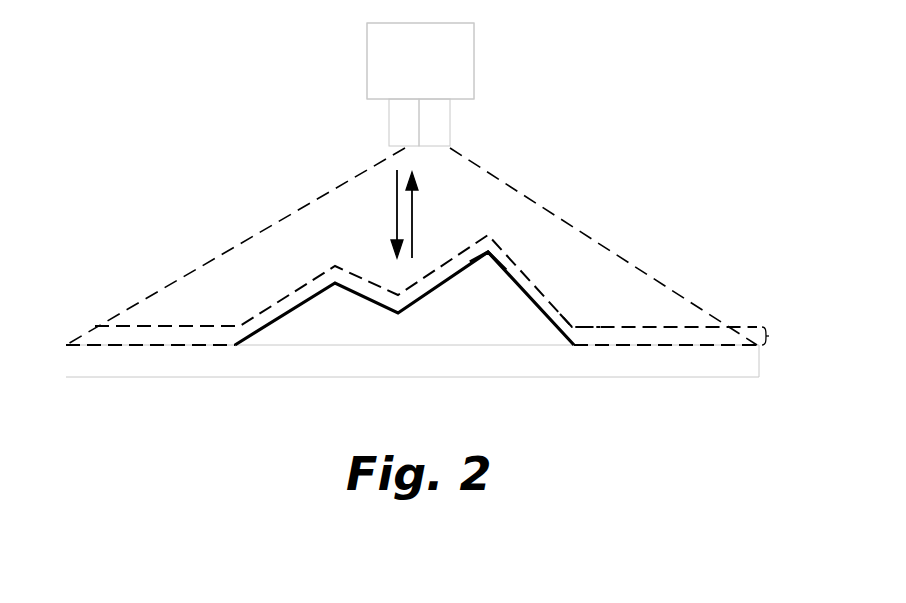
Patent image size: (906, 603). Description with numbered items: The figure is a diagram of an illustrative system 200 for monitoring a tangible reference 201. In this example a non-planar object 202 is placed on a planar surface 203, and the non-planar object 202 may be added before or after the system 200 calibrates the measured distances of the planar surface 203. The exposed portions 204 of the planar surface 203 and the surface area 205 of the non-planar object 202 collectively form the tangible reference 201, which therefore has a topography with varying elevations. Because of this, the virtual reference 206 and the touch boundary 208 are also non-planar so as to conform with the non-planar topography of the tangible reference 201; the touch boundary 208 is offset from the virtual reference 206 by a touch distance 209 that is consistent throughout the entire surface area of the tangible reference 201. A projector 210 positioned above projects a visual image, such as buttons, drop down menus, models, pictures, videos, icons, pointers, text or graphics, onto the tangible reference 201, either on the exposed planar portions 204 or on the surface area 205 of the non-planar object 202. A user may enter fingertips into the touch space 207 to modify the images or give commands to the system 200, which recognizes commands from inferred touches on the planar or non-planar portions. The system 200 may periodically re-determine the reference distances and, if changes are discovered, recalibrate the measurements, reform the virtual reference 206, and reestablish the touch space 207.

The system 200 is at (198, 98).
The tangible reference 201 is at (552, 365).
The non-planar object 202 is at (373, 331).
The planar surface 203 is at (98, 326).
The exposed portions of the planar surface 204 is at (203, 348).
The surface area of the non-planar object 205 is at (290, 315).
The virtual reference 206 is at (614, 345).
The touch space 207 is at (488, 236).
The touch boundary 208 is at (572, 322).
The touch distance 209 is at (784, 335).
The projector 210 is at (450, 135).